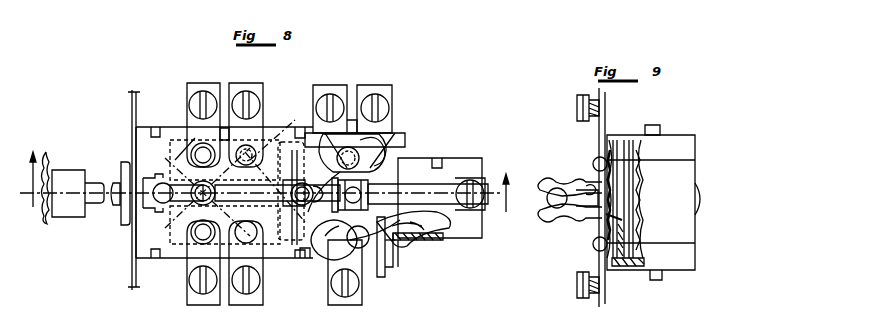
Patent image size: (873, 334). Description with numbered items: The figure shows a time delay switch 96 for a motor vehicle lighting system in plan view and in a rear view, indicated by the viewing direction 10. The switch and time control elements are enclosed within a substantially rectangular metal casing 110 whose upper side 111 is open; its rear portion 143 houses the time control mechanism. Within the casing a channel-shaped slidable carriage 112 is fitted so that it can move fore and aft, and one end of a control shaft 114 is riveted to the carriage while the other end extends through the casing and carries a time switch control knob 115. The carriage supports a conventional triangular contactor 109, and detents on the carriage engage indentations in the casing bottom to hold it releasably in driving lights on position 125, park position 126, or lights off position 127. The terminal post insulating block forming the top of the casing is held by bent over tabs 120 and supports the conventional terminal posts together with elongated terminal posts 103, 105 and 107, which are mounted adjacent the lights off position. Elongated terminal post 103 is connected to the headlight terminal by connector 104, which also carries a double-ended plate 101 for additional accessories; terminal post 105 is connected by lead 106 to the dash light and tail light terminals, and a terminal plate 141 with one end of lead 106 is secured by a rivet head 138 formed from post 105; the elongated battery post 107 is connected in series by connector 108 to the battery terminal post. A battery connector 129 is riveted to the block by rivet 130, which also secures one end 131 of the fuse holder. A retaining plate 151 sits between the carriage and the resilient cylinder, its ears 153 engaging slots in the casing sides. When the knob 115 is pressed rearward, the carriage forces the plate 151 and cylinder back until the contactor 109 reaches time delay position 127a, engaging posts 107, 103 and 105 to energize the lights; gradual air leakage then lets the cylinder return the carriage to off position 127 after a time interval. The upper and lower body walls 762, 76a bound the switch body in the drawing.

In FIG. 8, the viewing direction arrow 10 is at (270, 189).
In FIG. 9, the time delay switch 96 is at (697, 260).
In FIG. 8, the plate 101 is at (381, 83).
In FIG. 8, the elongated terminal post 103 is at (381, 149).
In FIG. 8, the connector 104 is at (295, 131).
In FIG. 8, the elongated terminal post 105 is at (359, 262).
In FIG. 8, the lead 106 is at (327, 310).
In FIG. 8, the elongated battery post 107 is at (289, 174).
In FIG. 8, the connector 108 is at (179, 210).
In FIG. 8, the contactor 109 is at (396, 242).
In FIG. 9, the contactor 109 is at (610, 218).
In FIG. 8, the casing 110 is at (138, 144).
In FIG. 9, the casing 110 is at (698, 154).
In FIG. 9, the upper side 111 is at (607, 140).
In FIG. 9, the slidable carriage 112 is at (637, 272).
In FIG. 8, the control shaft 114 is at (88, 210).
In FIG. 8, the time switch control knob 115 is at (46, 137).
In FIG. 8, the bent over tabs 120 is at (296, 128).
In FIG. 8, the driving lights on position 125 is at (179, 110).
In FIG. 8, the park position 126 is at (205, 252).
In FIG. 8, the lights off position 127 is at (278, 264).
In FIG. 8, the time delay position 127a is at (306, 303).
In FIG. 8, the battery connector 129 is at (445, 234).
In FIG. 8, the rivet 130 is at (369, 189).
In FIG. 9, the rivet 130 is at (595, 187).
In FIG. 9, the end of fuse holder 131 is at (543, 220).
In FIG. 9, the rivet head 138 is at (594, 161).
In FIG. 8, the terminal plate 141 is at (362, 306).
In FIG. 8, the rear portion of casing 143 is at (469, 162).
In FIG. 9, the rear portion of casing 143 is at (667, 163).
In FIG. 8, the retaining plate 151 is at (387, 245).
In FIG. 9, the ears 153 is at (661, 273).
In FIG. 8, the body upper wall 762 is at (130, 113).
In FIG. 8, the body lower wall 76a is at (126, 162).